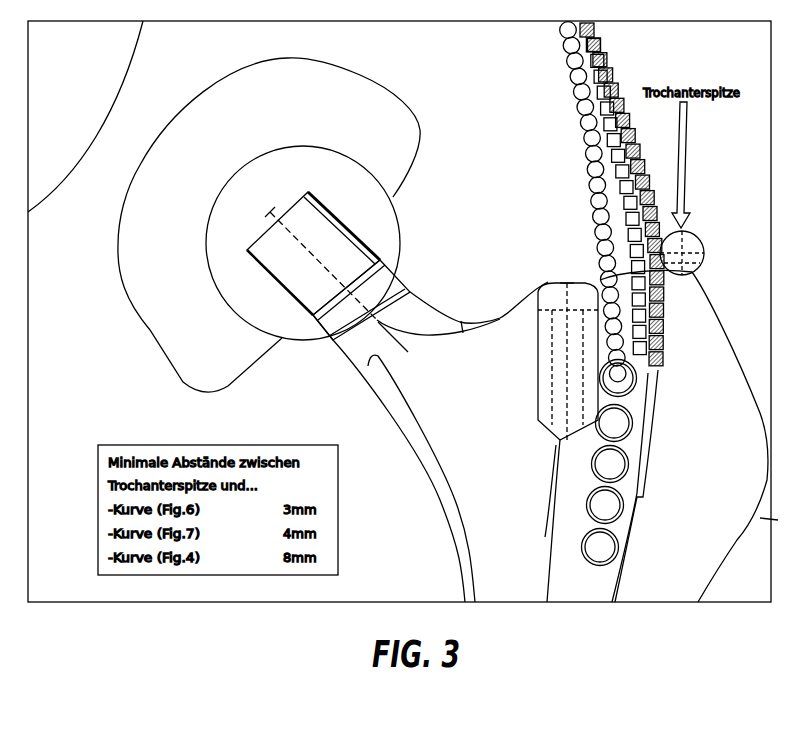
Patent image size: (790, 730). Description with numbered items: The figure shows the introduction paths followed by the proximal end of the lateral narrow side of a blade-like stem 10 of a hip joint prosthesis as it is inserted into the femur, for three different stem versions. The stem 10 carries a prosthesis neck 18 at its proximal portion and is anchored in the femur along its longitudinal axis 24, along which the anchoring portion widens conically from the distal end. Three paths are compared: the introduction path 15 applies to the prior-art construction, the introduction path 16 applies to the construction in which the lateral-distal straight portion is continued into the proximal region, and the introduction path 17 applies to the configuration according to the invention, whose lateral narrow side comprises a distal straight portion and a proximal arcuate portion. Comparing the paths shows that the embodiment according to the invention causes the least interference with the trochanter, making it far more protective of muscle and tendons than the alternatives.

The blade-like stem 10 is at (625, 436).
The introduction path 15 is at (640, 150).
The introduction path 16 is at (620, 183).
The introduction path 17 is at (586, 138).
The prosthesis neck 18 is at (328, 266).
The longitudinal axis 24 is at (547, 537).